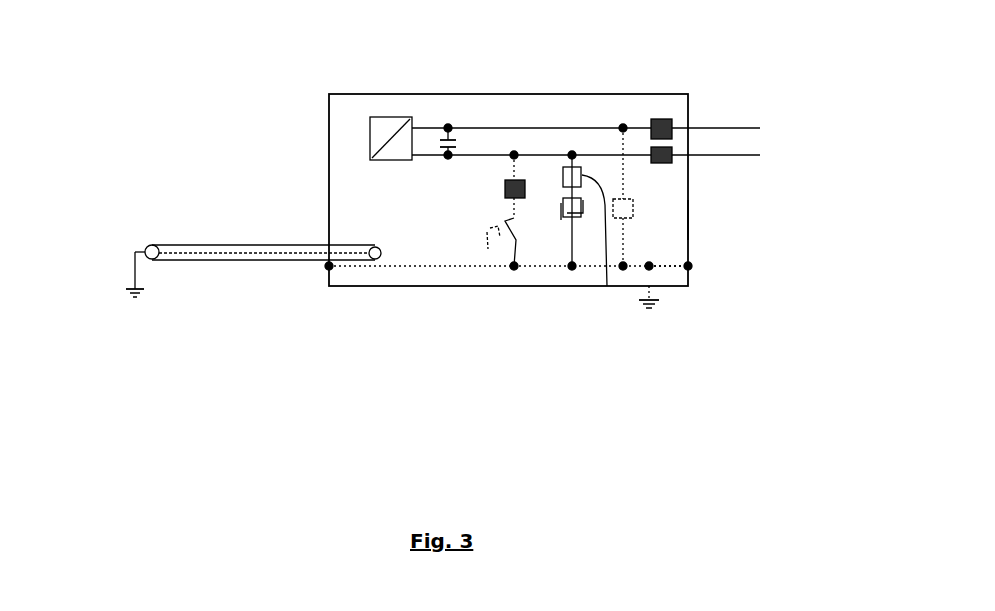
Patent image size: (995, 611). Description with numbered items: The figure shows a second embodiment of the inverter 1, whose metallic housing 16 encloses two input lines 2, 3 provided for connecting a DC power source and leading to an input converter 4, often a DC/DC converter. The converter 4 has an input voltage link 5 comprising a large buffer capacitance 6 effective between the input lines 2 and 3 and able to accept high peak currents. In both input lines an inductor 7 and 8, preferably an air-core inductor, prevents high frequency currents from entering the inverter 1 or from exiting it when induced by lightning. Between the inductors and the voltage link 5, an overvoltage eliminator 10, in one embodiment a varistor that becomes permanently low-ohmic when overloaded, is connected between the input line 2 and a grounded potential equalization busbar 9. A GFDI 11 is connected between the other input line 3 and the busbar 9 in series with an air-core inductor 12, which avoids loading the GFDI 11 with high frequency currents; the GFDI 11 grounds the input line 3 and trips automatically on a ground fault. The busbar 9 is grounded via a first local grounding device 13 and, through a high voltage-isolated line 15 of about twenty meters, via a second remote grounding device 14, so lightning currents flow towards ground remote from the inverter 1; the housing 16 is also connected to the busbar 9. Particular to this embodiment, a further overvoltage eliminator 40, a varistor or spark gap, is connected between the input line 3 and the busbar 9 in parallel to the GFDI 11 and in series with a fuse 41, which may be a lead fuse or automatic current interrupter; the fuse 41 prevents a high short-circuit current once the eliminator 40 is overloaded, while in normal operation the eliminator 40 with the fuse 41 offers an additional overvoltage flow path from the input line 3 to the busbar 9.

The inverter 1 is at (662, 92).
The input line 2 is at (573, 128).
The input line 3 is at (550, 155).
The input converter 4 is at (394, 117).
The input voltage link 5 is at (450, 123).
The buffer capacitance 6 is at (442, 160).
The inductor 7 is at (672, 124).
The inductor 8 is at (672, 152).
The potential equalization busbar 9 is at (665, 264).
The overvoltage eliminator 10 is at (643, 200).
The GFDI 11 is at (482, 223).
The air-core inductor 12 is at (505, 190).
The first local grounding device 13 is at (663, 302).
The second remote grounding device 14 is at (128, 265).
The high voltage-isolated line 15 is at (232, 245).
The metallic housing 16 is at (689, 218).
The further overvoltage eliminator 40 is at (563, 224).
The fuse 41 is at (607, 286).